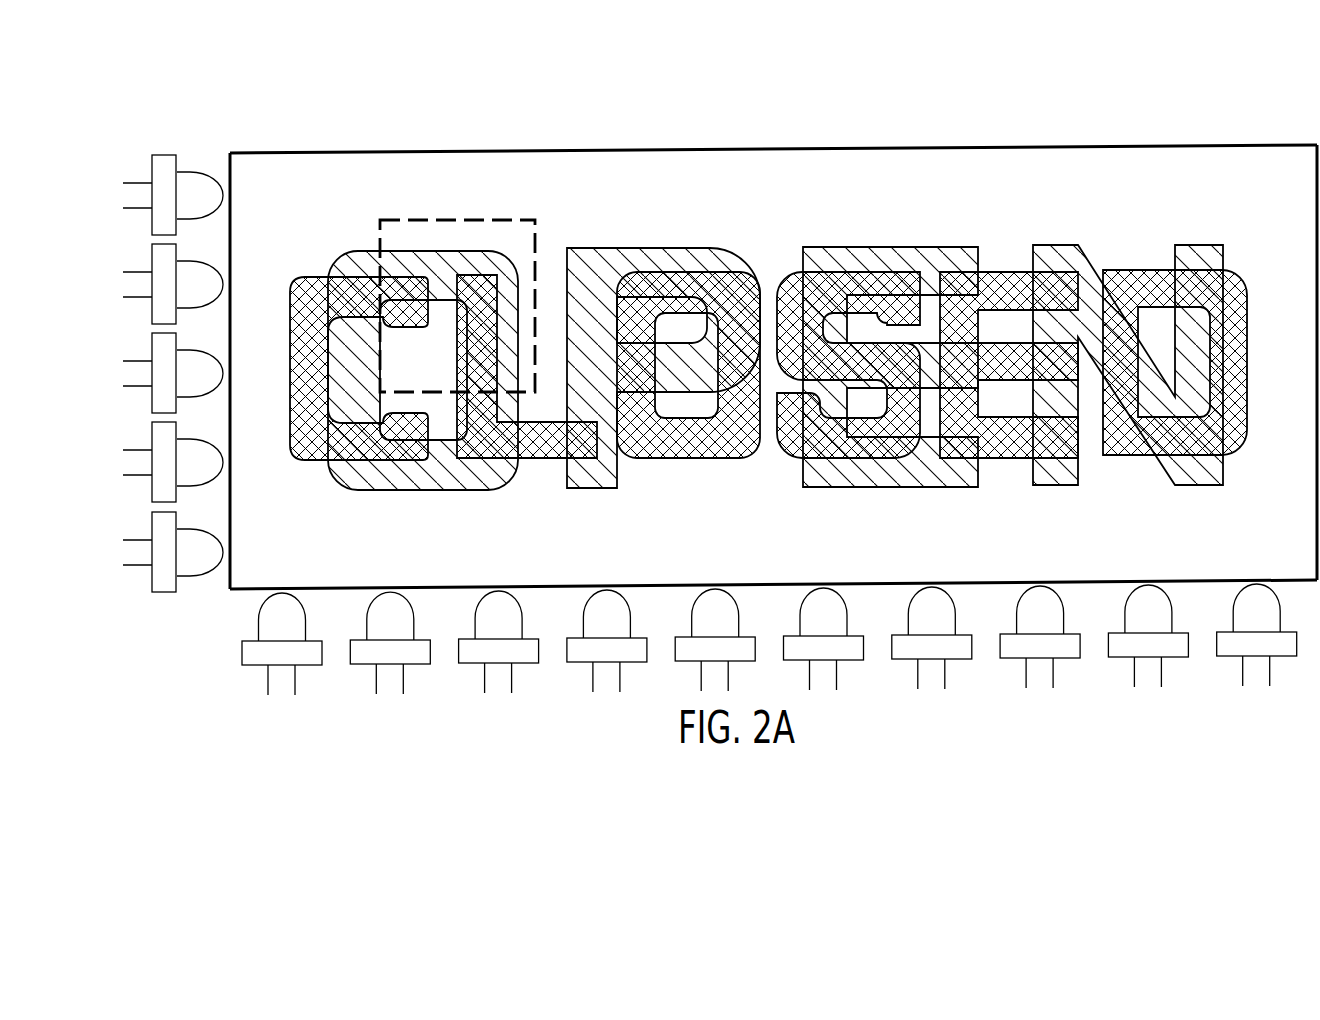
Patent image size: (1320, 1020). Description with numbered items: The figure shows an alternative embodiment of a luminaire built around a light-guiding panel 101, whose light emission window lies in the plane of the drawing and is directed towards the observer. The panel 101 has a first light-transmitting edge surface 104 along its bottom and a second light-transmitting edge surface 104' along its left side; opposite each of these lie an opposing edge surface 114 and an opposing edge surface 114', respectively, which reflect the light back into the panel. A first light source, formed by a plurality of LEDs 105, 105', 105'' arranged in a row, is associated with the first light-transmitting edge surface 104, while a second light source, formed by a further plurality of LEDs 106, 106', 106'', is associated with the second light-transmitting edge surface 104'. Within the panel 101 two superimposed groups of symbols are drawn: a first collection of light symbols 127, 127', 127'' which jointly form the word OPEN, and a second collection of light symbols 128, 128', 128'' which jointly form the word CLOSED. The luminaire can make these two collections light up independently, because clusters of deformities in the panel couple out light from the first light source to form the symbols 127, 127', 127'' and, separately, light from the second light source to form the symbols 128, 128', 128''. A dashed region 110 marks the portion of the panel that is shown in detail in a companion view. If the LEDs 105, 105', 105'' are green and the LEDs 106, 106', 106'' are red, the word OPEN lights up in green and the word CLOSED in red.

The panel 101 is at (773, 316).
The first light-transmitting edge surface 104 is at (773, 558).
The second light-transmitting edge surface 104' is at (256, 371).
The LED of first light source 105 is at (261, 651).
The LED of first light source 105' is at (376, 651).
The LED of first light source 105'' is at (483, 650).
The LED of second light source 106 is at (166, 569).
The LED of second light source 106' is at (166, 468).
The LED of second light source 106'' is at (165, 364).
The detail region of the luminaire 110 is at (495, 218).
The opposing edge surface 114 is at (773, 174).
The opposing edge surface 114' is at (1284, 362).
The light symbol of first collection 127 is at (423, 346).
The light symbol of first collection 127' is at (663, 343).
The light symbol of first collection 127'' is at (890, 343).
The light symbol of second collection 128 is at (359, 393).
The light symbol of second collection 128' is at (527, 400).
The light symbol of second collection 128'' is at (688, 388).